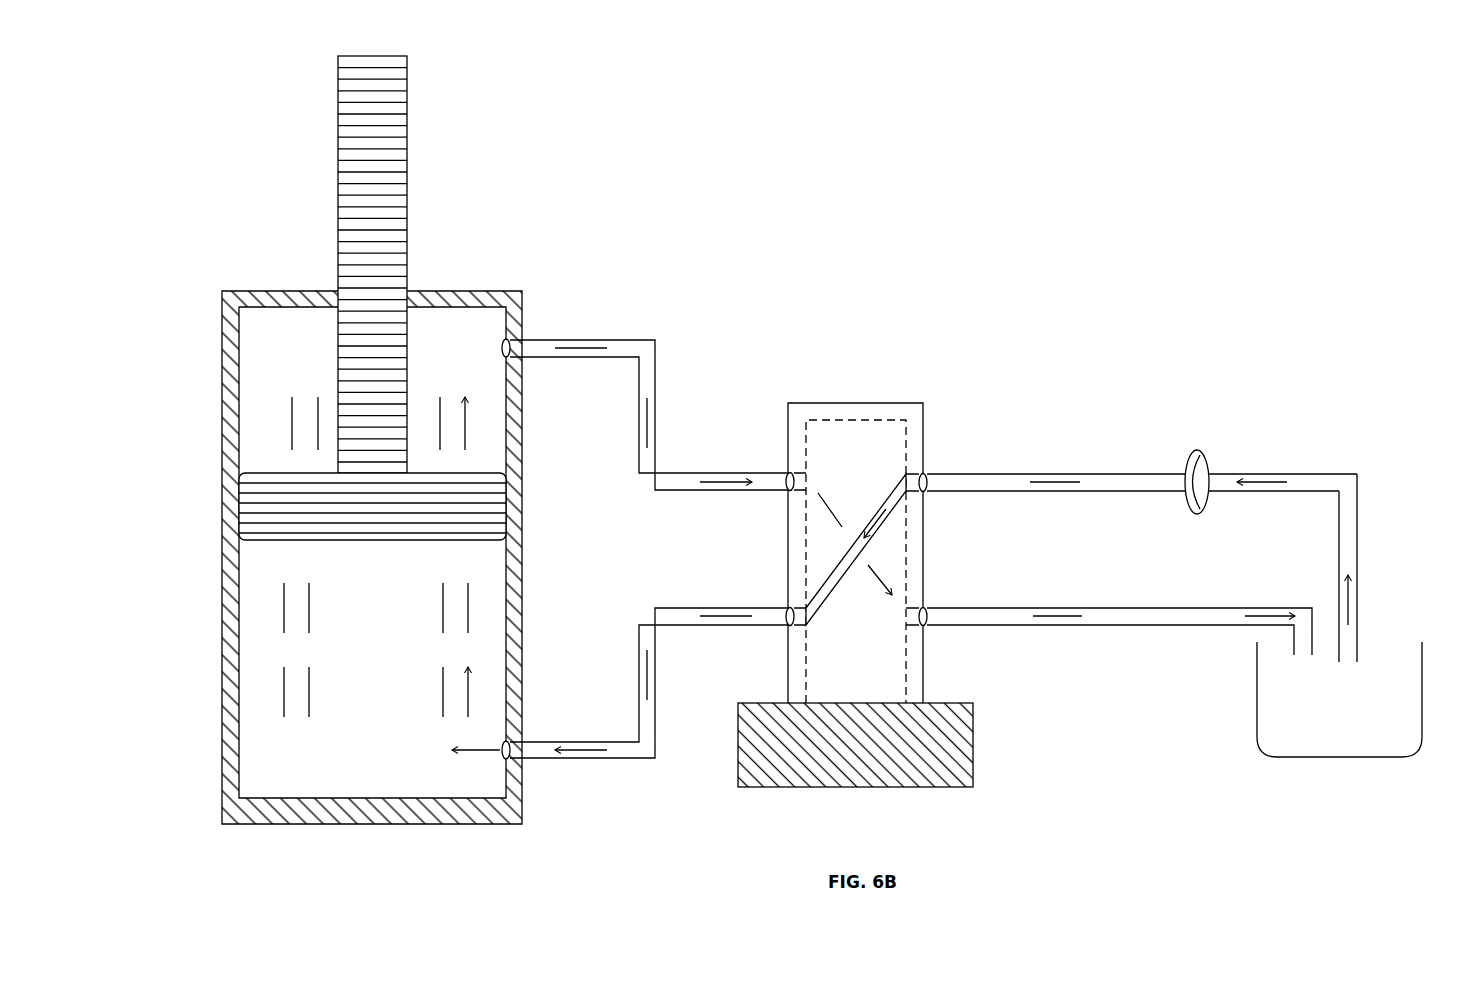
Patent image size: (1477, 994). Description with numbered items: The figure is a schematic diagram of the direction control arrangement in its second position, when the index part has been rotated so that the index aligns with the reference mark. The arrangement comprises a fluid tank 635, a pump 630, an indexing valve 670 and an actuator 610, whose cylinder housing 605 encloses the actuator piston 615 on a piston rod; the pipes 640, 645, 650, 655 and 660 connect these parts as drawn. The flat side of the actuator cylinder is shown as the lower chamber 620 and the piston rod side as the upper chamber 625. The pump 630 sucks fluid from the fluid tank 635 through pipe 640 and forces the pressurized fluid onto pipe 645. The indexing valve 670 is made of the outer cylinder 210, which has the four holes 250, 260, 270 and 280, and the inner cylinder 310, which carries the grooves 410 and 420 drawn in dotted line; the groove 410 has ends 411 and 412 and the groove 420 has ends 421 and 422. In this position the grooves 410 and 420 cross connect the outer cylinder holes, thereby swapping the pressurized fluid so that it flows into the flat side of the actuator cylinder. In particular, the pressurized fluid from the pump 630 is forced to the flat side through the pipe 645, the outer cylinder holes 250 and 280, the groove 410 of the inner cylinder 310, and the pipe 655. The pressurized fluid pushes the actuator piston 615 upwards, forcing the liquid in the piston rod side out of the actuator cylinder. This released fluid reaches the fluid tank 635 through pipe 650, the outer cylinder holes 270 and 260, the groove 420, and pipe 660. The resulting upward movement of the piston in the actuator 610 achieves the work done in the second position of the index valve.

The cylinder housing 605 is at (497, 289).
The actuator 610 is at (369, 440).
The actuator piston 615 is at (405, 222).
The lower chamber fluid 620 is at (372, 669).
The upper chamber fluid 625 is at (372, 390).
The pump 630 is at (1203, 458).
The fluid tank 635 is at (1424, 670).
The pipe 640 is at (1358, 500).
The pipe 645 is at (1110, 474).
The pipe 650 is at (657, 365).
The pipe 655 is at (659, 716).
The pipe 660 is at (1183, 608).
The indexing valve 670 is at (827, 797).
The outer cylinder 210 is at (923, 403).
The inner cylinder 310 is at (847, 514).
The outer cylinder hole 250 is at (925, 474).
The outer cylinder hole 260 is at (925, 608).
The outer cylinder hole 270 is at (789, 473).
The outer cylinder hole 280 is at (789, 608).
The groove 410 is at (856, 548).
The end of groove 410 411 is at (810, 622).
The end of groove 410 412 is at (904, 478).
The groove 420 is at (856, 547).
The end of groove 420 421 is at (808, 473).
The end of groove 420 422 is at (905, 617).